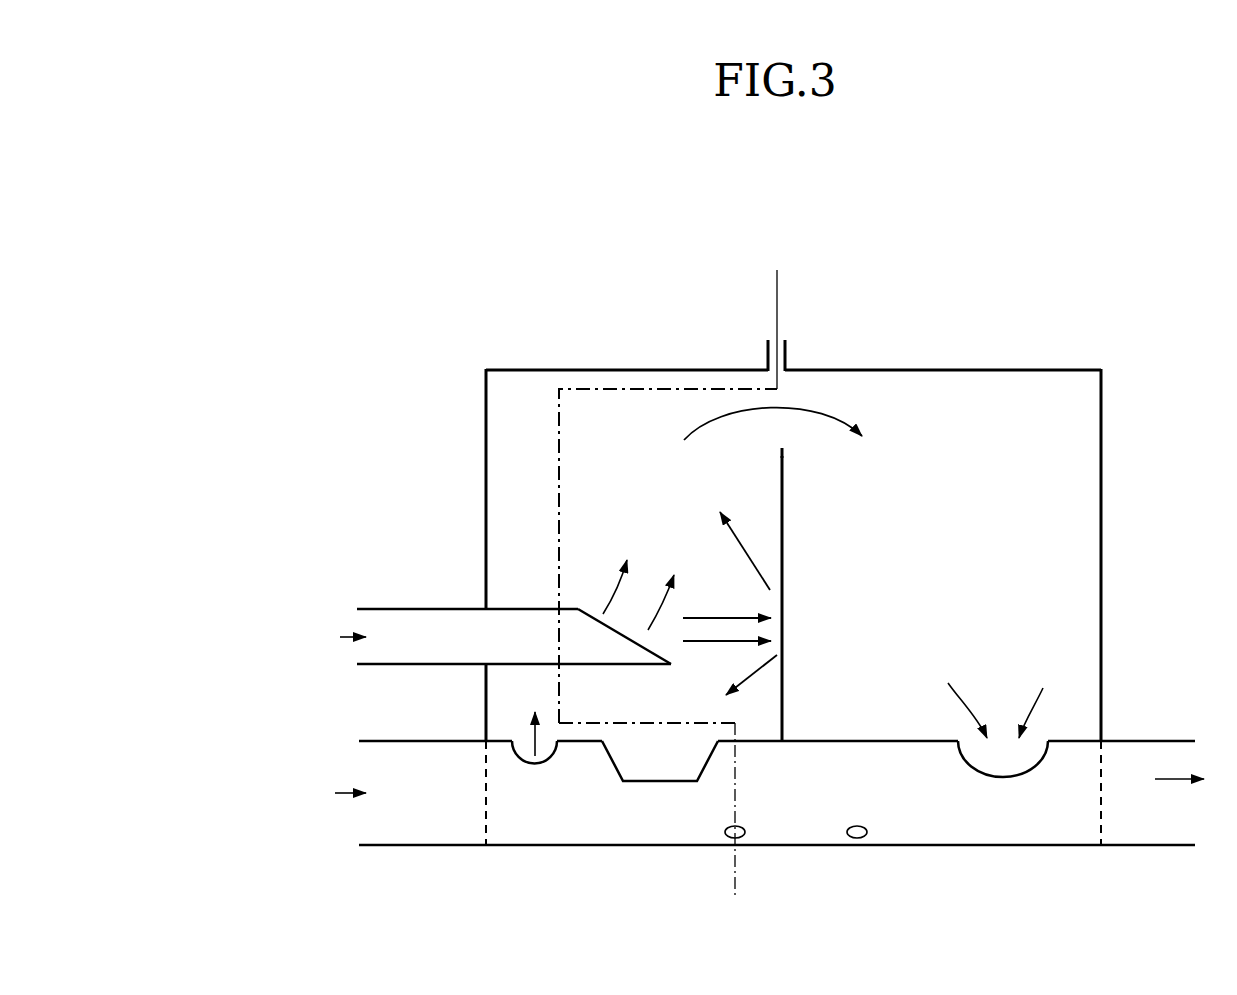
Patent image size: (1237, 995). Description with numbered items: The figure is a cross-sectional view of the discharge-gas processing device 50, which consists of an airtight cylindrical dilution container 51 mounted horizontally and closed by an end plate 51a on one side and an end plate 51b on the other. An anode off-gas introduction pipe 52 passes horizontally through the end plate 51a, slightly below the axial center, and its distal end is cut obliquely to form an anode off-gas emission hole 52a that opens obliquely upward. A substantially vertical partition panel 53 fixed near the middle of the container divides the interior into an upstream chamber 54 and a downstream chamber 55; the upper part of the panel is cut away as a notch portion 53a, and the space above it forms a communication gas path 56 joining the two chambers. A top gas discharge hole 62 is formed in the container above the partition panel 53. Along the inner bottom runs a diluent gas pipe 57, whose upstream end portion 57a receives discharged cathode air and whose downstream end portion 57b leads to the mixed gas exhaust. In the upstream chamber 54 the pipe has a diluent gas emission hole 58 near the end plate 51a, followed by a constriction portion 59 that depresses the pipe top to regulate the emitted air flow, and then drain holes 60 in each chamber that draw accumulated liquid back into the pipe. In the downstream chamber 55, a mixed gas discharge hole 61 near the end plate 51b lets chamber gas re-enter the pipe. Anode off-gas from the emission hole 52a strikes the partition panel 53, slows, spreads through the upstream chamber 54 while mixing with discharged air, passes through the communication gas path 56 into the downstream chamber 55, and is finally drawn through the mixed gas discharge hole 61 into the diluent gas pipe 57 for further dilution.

The discharge-gas processing device 50 is at (697, 266).
The dilution container 51 is at (1034, 369).
The end plate 51a is at (485, 408).
The end plate 51b is at (1102, 433).
The anode off-gas introduction pipe 52 is at (430, 609).
The anode off-gas emission hole 52a is at (590, 613).
The partition panel 53 is at (785, 510).
The notch portion 53a is at (786, 444).
The upstream chamber 54 is at (510, 476).
The downstream chamber 55 is at (1075, 506).
The communication gas path 56 is at (783, 395).
The diluent gas pipe 57 is at (468, 848).
The upstream end portion 57a is at (397, 848).
The downstream end portion 57b is at (1156, 848).
The diluent gas emission hole 58 is at (522, 752).
The constriction portion 59 is at (665, 778).
The drain holes 60 is at (741, 838).
The mixed gas discharge hole 61 is at (1035, 745).
The top gas discharge hole 62 is at (780, 342).